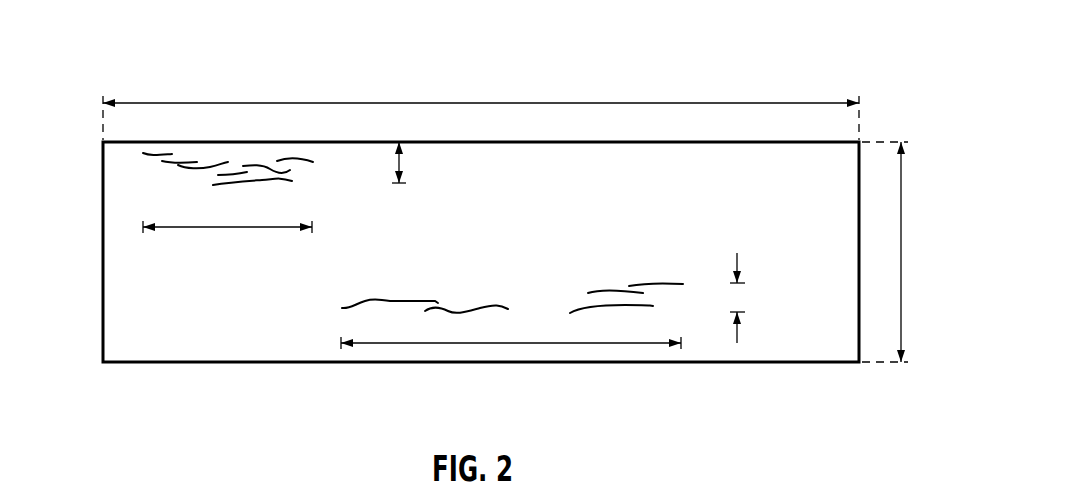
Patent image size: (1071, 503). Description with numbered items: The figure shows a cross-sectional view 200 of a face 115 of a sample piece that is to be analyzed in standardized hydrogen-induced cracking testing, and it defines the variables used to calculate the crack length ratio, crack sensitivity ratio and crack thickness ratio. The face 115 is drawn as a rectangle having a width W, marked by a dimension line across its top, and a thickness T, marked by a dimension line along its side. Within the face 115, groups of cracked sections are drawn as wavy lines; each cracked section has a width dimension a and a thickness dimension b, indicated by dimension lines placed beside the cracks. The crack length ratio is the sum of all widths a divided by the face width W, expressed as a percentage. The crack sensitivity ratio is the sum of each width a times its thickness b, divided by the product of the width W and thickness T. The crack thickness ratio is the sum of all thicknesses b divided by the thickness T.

The cross-sectional view 200 is at (502, 226).
The face 115 is at (202, 343).
The width W is at (465, 103).
The thickness T is at (902, 260).
The width dimension of cracked section a is at (224, 228).
The thickness dimension of cracked section b is at (401, 163).